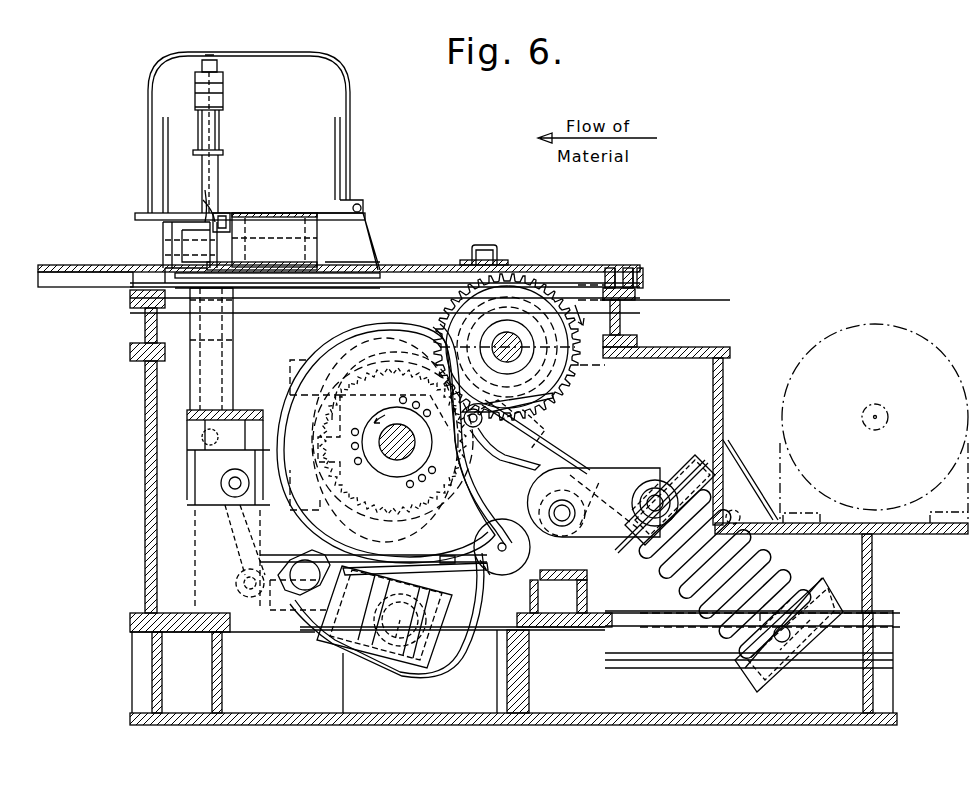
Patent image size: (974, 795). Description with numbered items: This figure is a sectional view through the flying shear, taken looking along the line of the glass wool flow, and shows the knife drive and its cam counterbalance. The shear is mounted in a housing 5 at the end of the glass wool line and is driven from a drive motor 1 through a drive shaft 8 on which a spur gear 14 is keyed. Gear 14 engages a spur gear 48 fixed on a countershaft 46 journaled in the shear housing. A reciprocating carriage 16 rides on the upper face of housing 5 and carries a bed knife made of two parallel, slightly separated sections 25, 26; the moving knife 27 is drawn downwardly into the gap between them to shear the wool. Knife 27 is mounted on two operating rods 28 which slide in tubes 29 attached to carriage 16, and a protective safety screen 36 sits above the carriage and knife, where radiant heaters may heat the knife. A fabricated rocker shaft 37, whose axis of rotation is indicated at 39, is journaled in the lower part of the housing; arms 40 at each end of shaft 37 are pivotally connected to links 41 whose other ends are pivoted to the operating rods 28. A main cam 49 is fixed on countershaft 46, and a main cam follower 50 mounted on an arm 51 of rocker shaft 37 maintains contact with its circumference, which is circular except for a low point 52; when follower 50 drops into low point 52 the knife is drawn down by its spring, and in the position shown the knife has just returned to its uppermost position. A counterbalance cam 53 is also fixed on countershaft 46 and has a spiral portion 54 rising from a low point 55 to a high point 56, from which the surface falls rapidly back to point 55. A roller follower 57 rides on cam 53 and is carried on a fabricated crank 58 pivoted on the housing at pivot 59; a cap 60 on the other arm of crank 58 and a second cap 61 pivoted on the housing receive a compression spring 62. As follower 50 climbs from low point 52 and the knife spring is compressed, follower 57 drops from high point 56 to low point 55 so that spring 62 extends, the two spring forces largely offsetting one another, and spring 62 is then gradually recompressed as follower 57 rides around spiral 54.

The drive motor 1 is at (830, 328).
The housing 5 is at (148, 420).
The drive shaft 8 is at (525, 355).
The spur gear 14 is at (532, 280).
The reciprocating carriage 16 is at (280, 216).
The bed knife section 25 is at (220, 216).
The bed knife section 26 is at (200, 213).
The moving knife 27 is at (205, 160).
The operating rods 28 is at (215, 168).
The tubes 29 is at (222, 323).
The protective safety screen 36 is at (349, 97).
The rocker shaft 37 is at (428, 670).
The axis of rotation 39 is at (385, 658).
The arms 40 is at (275, 598).
The links 41 is at (236, 528).
The countershaft 46 is at (392, 455).
The spur gear 48 is at (332, 400).
The main cam 49 is at (344, 335).
The main cam follower 50 is at (495, 536).
The arm 51 is at (483, 656).
The low point 52 is at (500, 435).
The counterbalance cam 53 is at (326, 377).
The spiral portion 54 is at (402, 518).
The low point 55 is at (442, 417).
The high point 56 is at (430, 323).
The roller follower 57 is at (553, 395).
The fabricated crank 58 is at (548, 426).
The pivot 59 is at (562, 503).
The cap 60 is at (650, 460).
The second cap 61 is at (822, 598).
The compression spring 62 is at (770, 558).